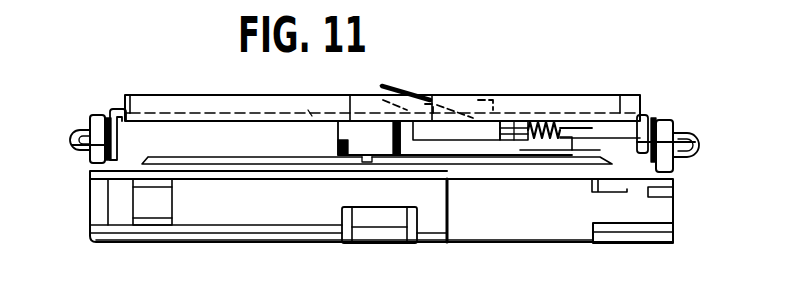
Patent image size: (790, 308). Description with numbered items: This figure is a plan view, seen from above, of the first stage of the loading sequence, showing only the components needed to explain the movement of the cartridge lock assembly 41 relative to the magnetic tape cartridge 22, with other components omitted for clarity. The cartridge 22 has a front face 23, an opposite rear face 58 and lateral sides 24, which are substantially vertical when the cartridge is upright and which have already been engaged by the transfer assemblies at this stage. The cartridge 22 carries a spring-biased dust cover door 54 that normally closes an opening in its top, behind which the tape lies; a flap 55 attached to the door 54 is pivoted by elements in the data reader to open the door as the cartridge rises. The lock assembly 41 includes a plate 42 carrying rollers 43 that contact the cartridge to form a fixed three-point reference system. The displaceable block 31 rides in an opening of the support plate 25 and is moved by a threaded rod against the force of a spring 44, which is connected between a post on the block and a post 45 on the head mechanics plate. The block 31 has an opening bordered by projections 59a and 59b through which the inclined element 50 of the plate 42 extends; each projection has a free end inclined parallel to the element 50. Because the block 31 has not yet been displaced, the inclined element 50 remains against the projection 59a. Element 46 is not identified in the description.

The magnetic tape cartridge 22 is at (377, 252).
The front face 23 is at (125, 243).
The lateral sides 24 is at (90, 212).
The support plate 25 is at (589, 160).
The displaceable block 31 is at (514, 146).
The cartridge lock assembly 41 is at (180, 89).
The plate 42 is at (137, 103).
The rollers 43 is at (99, 114).
The spring 44 is at (545, 123).
The post 45 is at (582, 132).
The spring housing 46 is at (513, 113).
The inclined element 50 is at (384, 86).
The dust cover door 54 is at (497, 224).
The flap 55 is at (650, 207).
The rear face 58 is at (124, 169).
The projection 59a is at (376, 97).
The projection 59b is at (485, 100).